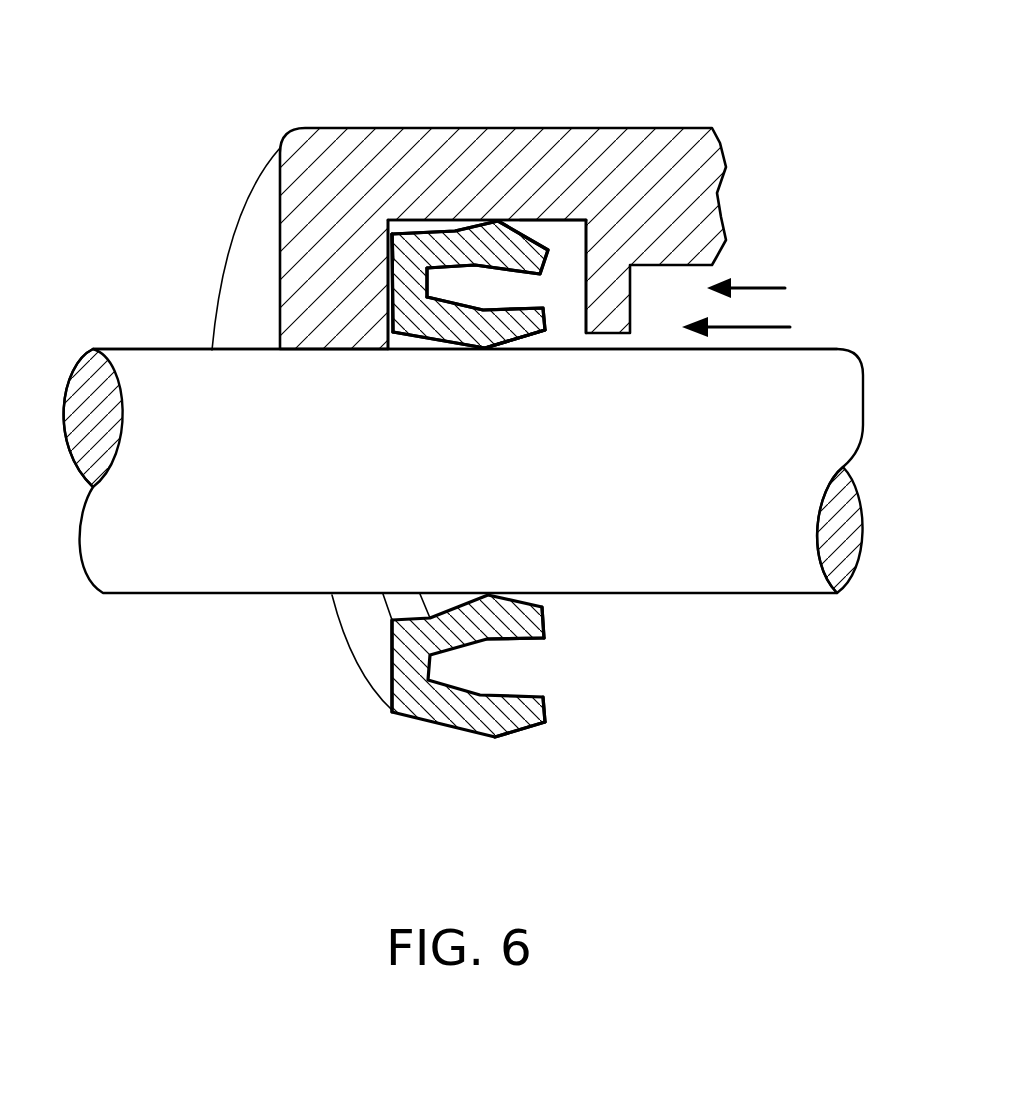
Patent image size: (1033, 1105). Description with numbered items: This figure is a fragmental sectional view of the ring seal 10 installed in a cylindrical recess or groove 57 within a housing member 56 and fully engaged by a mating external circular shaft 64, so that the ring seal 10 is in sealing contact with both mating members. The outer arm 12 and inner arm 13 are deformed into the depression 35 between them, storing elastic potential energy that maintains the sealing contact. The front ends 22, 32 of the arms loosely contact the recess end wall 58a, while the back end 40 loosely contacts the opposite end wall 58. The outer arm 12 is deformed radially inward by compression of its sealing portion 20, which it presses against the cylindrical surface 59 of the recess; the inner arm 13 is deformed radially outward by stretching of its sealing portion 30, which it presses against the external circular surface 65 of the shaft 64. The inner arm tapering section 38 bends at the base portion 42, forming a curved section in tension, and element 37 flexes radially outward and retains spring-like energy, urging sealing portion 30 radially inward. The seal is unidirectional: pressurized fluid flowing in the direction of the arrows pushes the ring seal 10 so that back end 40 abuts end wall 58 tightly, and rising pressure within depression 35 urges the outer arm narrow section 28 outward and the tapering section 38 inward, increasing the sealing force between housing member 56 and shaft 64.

The ring seal 10 is at (392, 718).
The outer arm 12 is at (545, 725).
The inner arm 13 is at (545, 642).
The sealing portion 20 is at (493, 222).
The front end 22 is at (545, 710).
The outer arm narrow section 28 is at (462, 243).
The sealing portion 30 is at (482, 349).
The front end 32 is at (545, 623).
The depression 35 is at (503, 283).
The element 37 is at (585, 220).
The inner arm tapering section 38 is at (455, 328).
The back end 40 is at (368, 652).
The base portion 42 is at (430, 332).
The housing member 56 is at (272, 152).
The cylindrical recess 57 is at (390, 235).
The end wall 58 is at (387, 248).
The end wall 58a is at (585, 220).
The cylindrical surface 59 is at (418, 220).
The shaft 64 is at (228, 430).
The external circular surface 65 is at (162, 348).